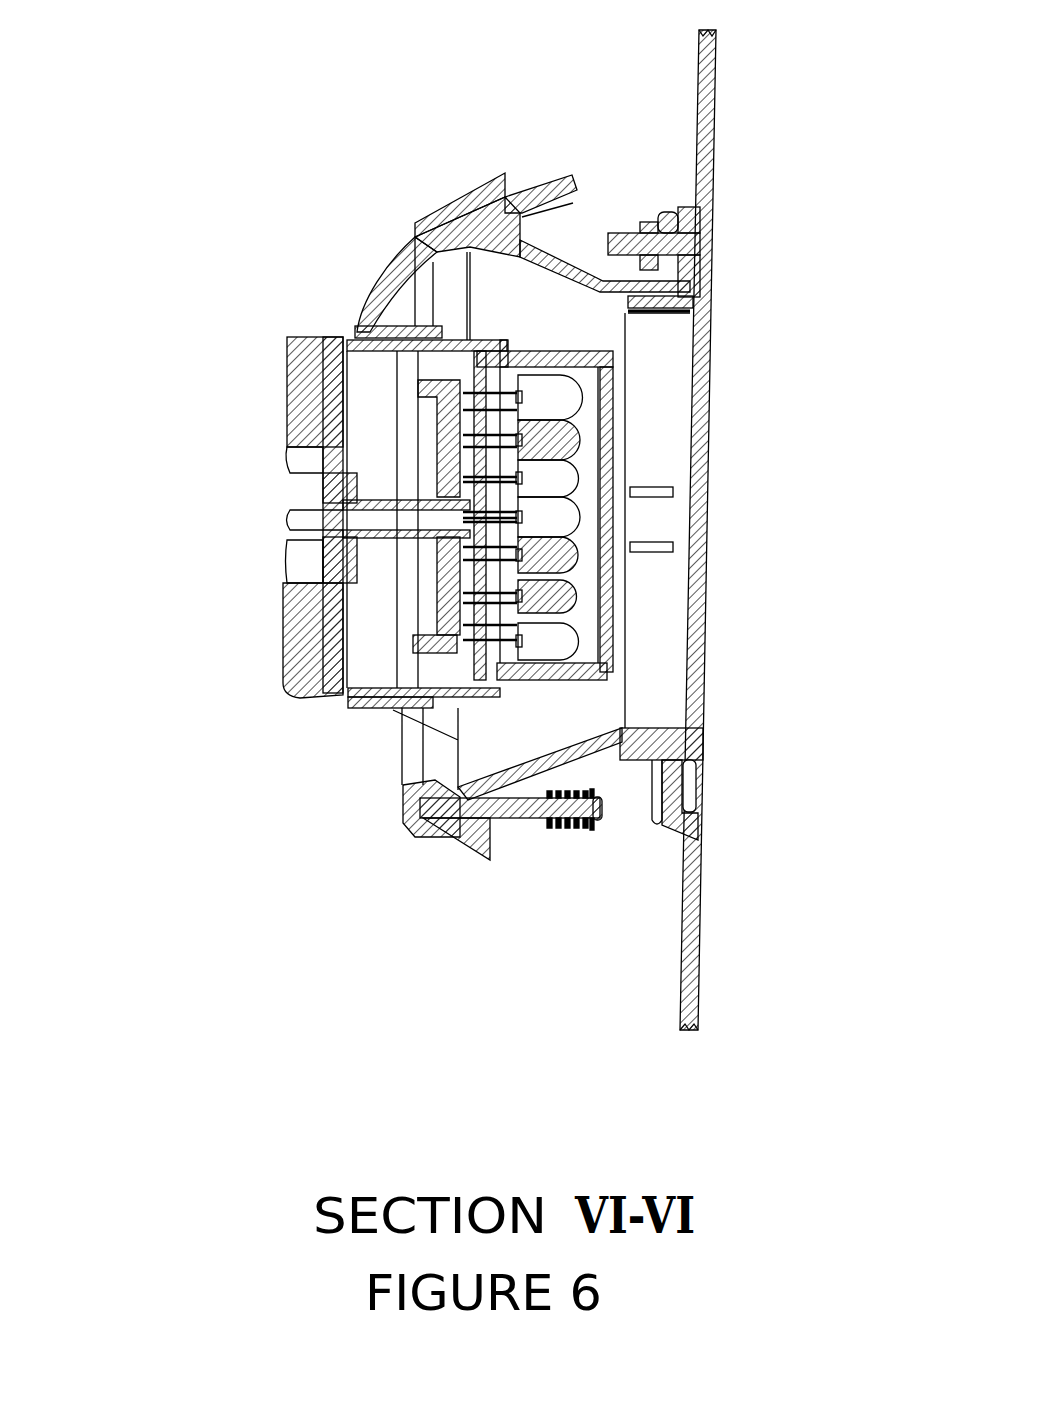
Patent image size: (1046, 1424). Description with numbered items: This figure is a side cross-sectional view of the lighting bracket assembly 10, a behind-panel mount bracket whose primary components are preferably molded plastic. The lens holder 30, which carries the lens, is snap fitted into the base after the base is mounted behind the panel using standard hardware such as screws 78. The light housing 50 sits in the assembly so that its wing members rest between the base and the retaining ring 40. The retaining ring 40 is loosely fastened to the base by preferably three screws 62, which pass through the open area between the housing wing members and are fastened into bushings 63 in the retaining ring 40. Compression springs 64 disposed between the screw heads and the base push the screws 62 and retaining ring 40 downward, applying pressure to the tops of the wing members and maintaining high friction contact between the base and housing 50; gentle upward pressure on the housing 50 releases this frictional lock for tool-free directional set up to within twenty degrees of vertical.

The lighting bracket assembly 10 is at (277, 147).
The lens holder 30 is at (627, 333).
The retaining ring 40 is at (507, 173).
The light housing 50 is at (362, 310).
The screws 62 is at (610, 837).
The bushings 63 is at (413, 840).
The compression springs 64 is at (568, 830).
The screws 78 is at (620, 233).